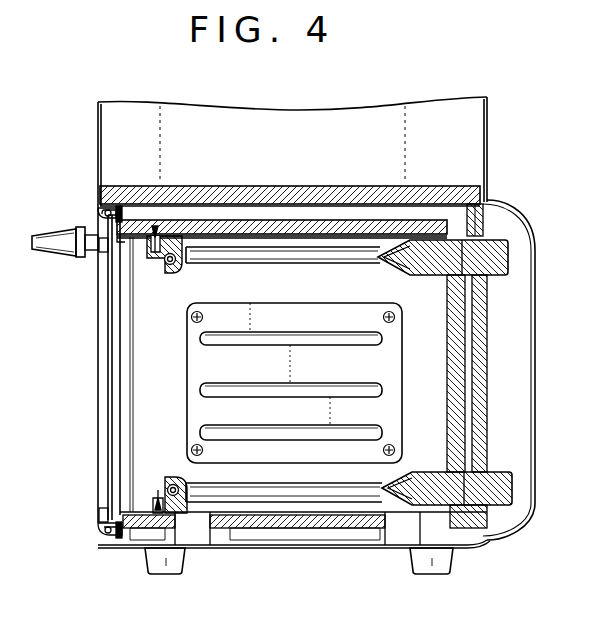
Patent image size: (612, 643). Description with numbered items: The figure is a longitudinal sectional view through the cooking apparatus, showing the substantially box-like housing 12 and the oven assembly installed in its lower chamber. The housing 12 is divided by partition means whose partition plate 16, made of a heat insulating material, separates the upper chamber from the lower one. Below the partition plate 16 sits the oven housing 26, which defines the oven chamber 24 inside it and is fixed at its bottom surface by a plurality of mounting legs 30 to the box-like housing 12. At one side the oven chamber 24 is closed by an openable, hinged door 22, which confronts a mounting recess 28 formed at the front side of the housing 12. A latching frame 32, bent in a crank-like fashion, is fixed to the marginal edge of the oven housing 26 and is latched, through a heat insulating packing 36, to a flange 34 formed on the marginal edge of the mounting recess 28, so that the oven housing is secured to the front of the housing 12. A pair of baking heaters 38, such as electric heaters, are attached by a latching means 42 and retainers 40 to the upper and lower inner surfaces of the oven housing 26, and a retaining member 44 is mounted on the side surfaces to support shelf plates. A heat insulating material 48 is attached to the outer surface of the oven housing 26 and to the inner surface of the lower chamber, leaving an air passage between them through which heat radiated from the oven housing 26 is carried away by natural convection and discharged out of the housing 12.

The housing 12 is at (487, 146).
The partition plate 16 is at (242, 186).
The door 22 is at (98, 432).
The oven chamber 24 is at (450, 381).
The oven housing 26 is at (143, 512).
The mounting recess 28 is at (84, 238).
The mounting legs 30 is at (200, 548).
The latching frame 32 is at (120, 207).
The flange 34 is at (100, 245).
The heat insulating packing 36 is at (100, 212).
The baking heaters 38 is at (335, 263).
The retainers 40 is at (428, 276).
The mounting bracket 42 is at (168, 273).
The retaining member 44 is at (187, 403).
The heat insulating material 48 is at (357, 220).